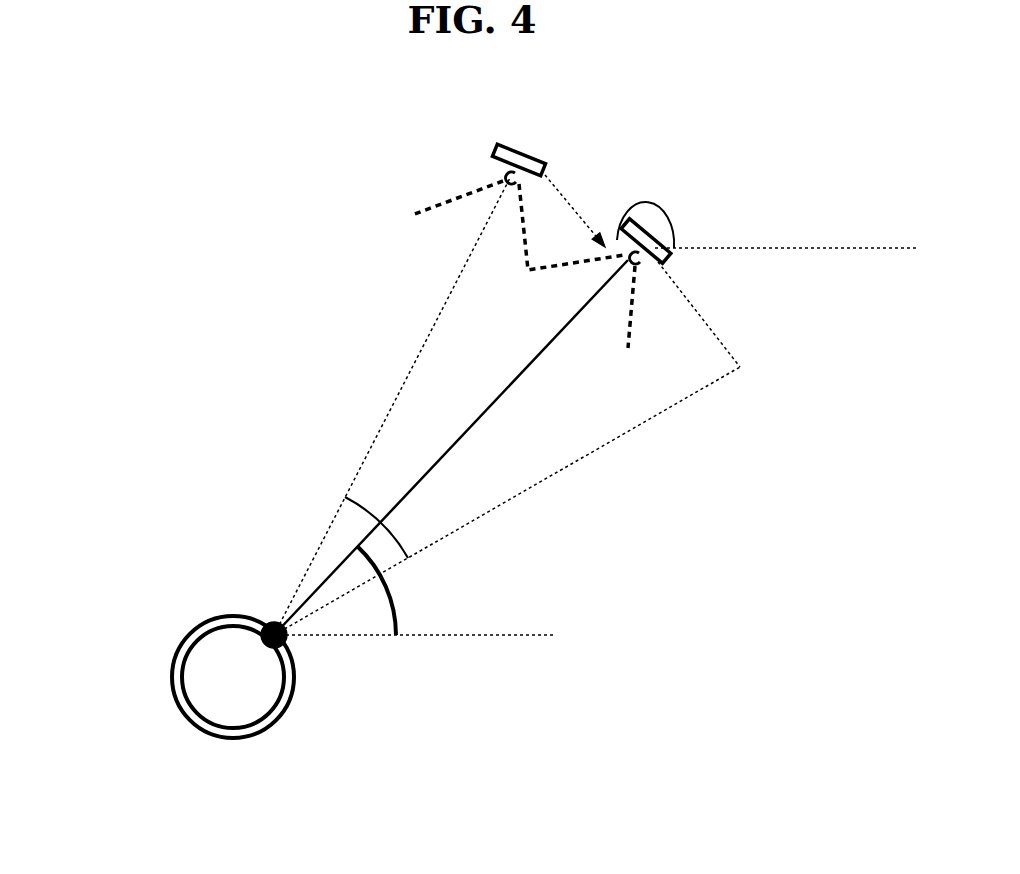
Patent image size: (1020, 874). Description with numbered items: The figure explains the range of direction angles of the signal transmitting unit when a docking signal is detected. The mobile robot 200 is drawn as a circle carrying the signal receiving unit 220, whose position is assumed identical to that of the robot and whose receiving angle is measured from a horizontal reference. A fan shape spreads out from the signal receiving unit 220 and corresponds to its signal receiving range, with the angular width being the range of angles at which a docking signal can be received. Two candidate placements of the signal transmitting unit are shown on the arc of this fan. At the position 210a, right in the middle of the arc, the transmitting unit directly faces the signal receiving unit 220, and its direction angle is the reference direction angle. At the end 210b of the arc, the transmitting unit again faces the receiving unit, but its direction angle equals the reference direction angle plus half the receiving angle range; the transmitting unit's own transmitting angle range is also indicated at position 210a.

The mobile robot 200 is at (212, 660).
The signal receiving unit 220 is at (273, 624).
The position of the signal transmitting unit in the middle of the arc 210a is at (643, 227).
The end of the arc 210b is at (527, 151).